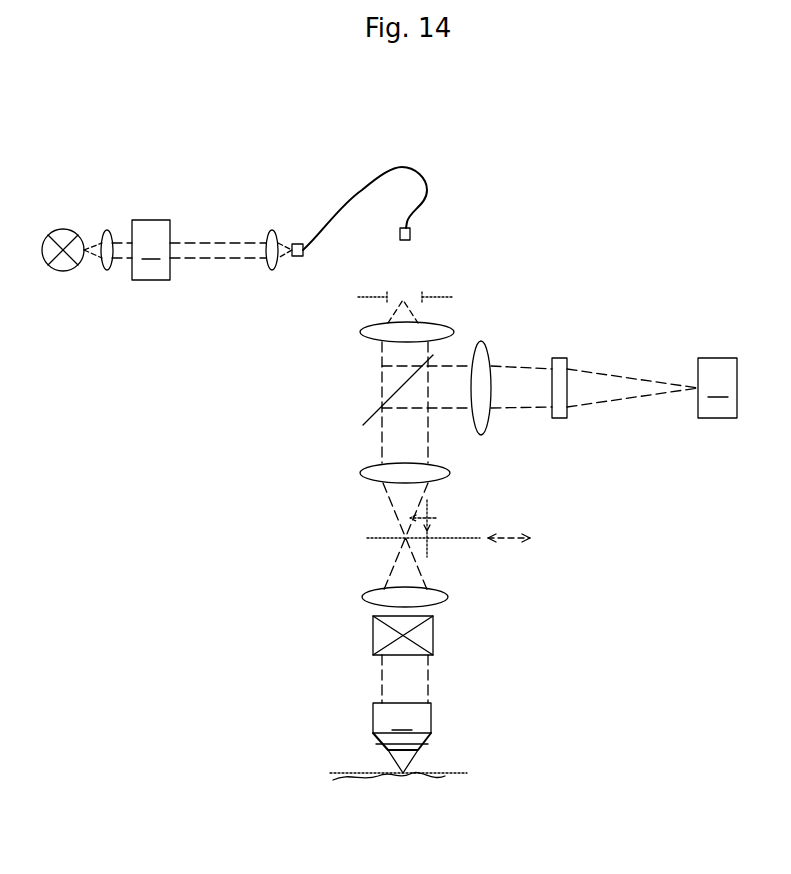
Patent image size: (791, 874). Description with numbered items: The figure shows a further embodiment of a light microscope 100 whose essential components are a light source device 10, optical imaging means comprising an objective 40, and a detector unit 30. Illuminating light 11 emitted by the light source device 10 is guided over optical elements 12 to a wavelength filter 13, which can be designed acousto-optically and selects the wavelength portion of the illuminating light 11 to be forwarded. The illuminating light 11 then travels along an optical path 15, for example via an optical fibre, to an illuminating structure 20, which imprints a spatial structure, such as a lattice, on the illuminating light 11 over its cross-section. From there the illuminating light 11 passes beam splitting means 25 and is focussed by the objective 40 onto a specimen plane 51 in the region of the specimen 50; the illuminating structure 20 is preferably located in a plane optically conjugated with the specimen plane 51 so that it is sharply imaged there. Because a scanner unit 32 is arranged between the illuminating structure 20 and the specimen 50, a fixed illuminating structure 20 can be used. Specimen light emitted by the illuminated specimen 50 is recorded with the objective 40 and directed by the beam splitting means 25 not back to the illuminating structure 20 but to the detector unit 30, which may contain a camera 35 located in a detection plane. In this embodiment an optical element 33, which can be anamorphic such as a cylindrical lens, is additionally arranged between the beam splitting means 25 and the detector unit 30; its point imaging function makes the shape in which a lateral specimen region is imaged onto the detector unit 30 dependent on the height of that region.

The light microscope 100 is at (554, 131).
The light source device 10 is at (63, 229).
The illuminating light 11 is at (103, 268).
The optical elements 12 is at (107, 230).
The wavelength filter 13 is at (151, 250).
The optical path 15 is at (400, 167).
The beam splitting means 25 is at (372, 410).
The illuminating structure 20 is at (470, 538).
The optical element 33 is at (563, 357).
The camera 35 is at (725, 420).
The detector unit 30 is at (723, 416).
The scanner unit 32 is at (433, 640).
The objective 40 is at (402, 738).
The specimen 50 is at (382, 780).
The specimen plane 51 is at (458, 772).